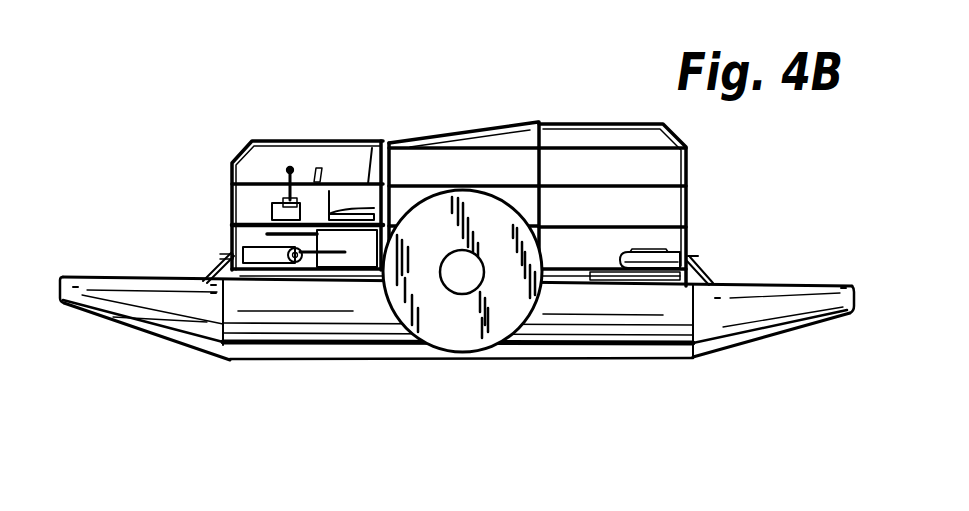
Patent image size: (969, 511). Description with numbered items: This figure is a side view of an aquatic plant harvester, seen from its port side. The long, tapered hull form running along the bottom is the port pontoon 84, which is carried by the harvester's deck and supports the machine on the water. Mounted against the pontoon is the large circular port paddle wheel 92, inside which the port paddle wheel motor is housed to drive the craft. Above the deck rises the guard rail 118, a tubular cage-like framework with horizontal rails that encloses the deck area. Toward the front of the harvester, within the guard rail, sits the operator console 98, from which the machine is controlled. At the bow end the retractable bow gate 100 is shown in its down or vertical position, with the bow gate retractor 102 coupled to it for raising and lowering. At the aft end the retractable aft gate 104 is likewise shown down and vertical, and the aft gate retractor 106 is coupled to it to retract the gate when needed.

The port pontoon 84 is at (181, 302).
The port paddle wheel 92 is at (493, 312).
The operator console 98 is at (298, 196).
The retractable bow gate 100 is at (210, 266).
The bow gate retractor 102 is at (267, 243).
The retractable aft gate 104 is at (708, 266).
The aft gate retractor 106 is at (651, 253).
The guard rail 118 is at (694, 161).